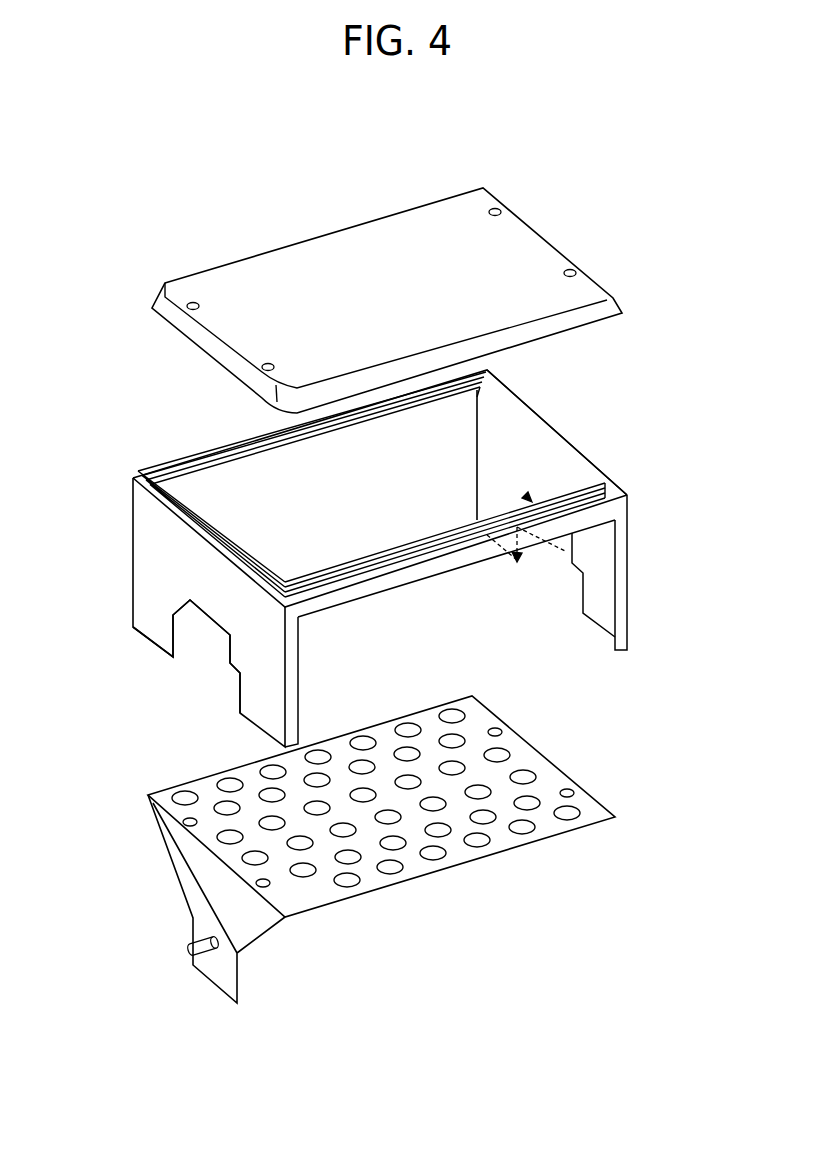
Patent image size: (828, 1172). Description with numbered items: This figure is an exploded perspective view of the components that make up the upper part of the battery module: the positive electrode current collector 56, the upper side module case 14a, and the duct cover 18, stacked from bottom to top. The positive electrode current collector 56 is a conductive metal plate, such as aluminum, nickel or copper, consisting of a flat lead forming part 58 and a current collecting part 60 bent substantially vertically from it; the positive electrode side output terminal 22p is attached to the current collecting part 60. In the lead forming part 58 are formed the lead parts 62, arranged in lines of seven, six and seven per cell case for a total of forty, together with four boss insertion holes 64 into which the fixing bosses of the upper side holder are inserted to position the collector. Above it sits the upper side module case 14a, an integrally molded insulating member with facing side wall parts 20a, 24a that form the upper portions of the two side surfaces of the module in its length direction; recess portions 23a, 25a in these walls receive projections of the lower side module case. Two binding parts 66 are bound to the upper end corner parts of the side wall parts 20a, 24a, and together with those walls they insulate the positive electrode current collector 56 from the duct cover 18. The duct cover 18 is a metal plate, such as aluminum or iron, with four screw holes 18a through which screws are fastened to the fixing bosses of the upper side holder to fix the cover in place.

The upper side module case 14a is at (362, 549).
The duct cover 18 is at (548, 238).
The screw holes 18a is at (498, 208).
The side wall part 20a is at (155, 552).
The recess portion 23a is at (190, 654).
The side wall part 24a is at (538, 412).
The recess portion 25a is at (582, 598).
The binding parts 66 is at (313, 438).
The positive electrode current collector 56 is at (379, 836).
The lead forming part 58 is at (517, 730).
The current collecting part 60 is at (255, 944).
The lead parts 62 is at (395, 745).
The boss insertion holes 64 is at (575, 790).
The positive electrode side output terminal 22p is at (189, 947).